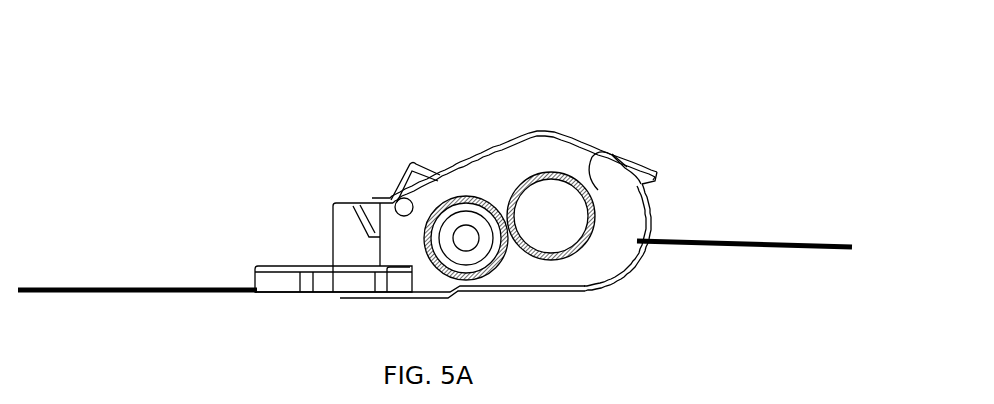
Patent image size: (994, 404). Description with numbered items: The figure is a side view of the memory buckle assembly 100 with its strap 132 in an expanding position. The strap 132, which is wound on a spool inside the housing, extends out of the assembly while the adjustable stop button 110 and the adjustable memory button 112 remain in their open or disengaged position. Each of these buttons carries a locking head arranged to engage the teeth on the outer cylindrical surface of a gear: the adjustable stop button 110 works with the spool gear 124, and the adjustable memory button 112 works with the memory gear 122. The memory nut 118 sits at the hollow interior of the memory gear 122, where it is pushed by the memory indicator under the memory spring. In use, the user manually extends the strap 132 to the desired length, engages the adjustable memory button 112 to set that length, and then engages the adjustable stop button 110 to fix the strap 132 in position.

The memory buckle assembly 100 is at (533, 92).
The adjustable stop button 110 is at (643, 168).
The adjustable memory button 112 is at (402, 180).
The memory nut 118 is at (480, 262).
The memory gear 122 is at (482, 200).
The spool gear 124 is at (537, 176).
The strap 132 is at (705, 243).